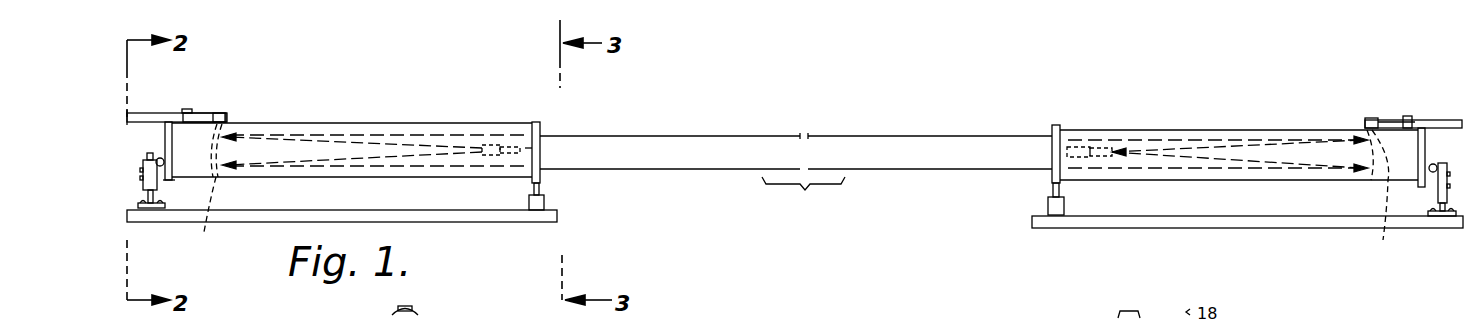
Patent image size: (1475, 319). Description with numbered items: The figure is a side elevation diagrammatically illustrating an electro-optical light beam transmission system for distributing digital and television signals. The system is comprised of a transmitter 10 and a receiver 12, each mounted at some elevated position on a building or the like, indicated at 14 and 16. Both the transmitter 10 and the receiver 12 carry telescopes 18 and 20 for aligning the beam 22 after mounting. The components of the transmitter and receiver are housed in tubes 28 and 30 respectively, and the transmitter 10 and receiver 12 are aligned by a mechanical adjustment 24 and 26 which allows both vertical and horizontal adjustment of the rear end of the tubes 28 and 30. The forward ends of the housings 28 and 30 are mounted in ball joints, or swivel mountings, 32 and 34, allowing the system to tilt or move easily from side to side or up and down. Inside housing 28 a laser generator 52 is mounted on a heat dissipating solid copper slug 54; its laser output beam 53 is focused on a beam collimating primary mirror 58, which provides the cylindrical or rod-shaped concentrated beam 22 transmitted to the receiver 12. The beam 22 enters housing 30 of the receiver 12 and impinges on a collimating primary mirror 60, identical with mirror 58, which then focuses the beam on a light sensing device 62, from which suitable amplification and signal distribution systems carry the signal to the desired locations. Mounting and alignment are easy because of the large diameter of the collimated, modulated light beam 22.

The transmitter 10 is at (295, 124).
The receiver 12 is at (1128, 130).
The elevated mounting position (building) 14 is at (455, 216).
The elevated mounting position (building) 16 is at (1230, 218).
The telescope 18 is at (150, 115).
The telescope 20 is at (1392, 118).
The light beam 22 is at (830, 148).
The mechanical adjustment 24 is at (150, 209).
The mechanical adjustment 26 is at (1440, 216).
The tube (transmitter housing) 28 is at (388, 125).
The tube (receiver housing) 30 is at (1200, 130).
The ball joint (swivel mounting) 32 is at (546, 197).
The ball joint (swivel mounting) 34 is at (1048, 200).
The laser generator 52 is at (484, 145).
The laser output beam 53 is at (332, 128).
The heat dissipating solid copper slug 54 is at (530, 148).
The beam collimating primary mirror 58 is at (206, 232).
The collimating primary mirror 60 is at (1378, 240).
The light sensing device 62 is at (1080, 147).